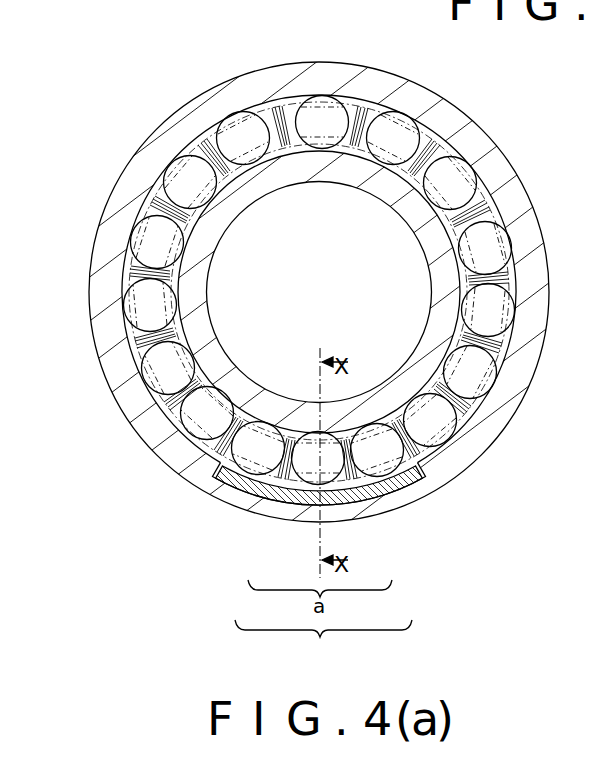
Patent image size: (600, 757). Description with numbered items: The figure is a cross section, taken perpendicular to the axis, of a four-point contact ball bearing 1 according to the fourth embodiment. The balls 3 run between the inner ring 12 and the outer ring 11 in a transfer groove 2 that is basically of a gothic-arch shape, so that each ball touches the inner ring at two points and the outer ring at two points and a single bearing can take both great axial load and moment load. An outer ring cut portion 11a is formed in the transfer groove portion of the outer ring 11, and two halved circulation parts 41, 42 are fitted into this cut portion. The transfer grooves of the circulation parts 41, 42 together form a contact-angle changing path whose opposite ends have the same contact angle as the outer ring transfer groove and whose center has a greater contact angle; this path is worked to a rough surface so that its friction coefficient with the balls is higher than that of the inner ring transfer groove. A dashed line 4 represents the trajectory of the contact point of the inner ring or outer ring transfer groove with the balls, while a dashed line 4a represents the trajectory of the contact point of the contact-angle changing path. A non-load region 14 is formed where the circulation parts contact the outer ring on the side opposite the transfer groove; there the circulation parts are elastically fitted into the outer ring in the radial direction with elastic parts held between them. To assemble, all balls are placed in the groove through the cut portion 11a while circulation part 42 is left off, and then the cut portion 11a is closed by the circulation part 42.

The rolling bearing 1 is at (273, 115).
The outer ring 11 is at (177, 130).
The outer ring cut portion 11a is at (333, 474).
The inner ring 12 is at (370, 167).
The raceway 2 is at (478, 202).
The balls (rolling elements) 3 is at (305, 117).
The dashed line (trajectory of contact point) 4 is at (177, 343).
The circulation part 41 is at (372, 462).
The circulation part 42 is at (212, 293).
The dashed line (trajectory of contact point of contact-angle changing path) 4a is at (360, 486).
The non-load region 14 is at (323, 642).